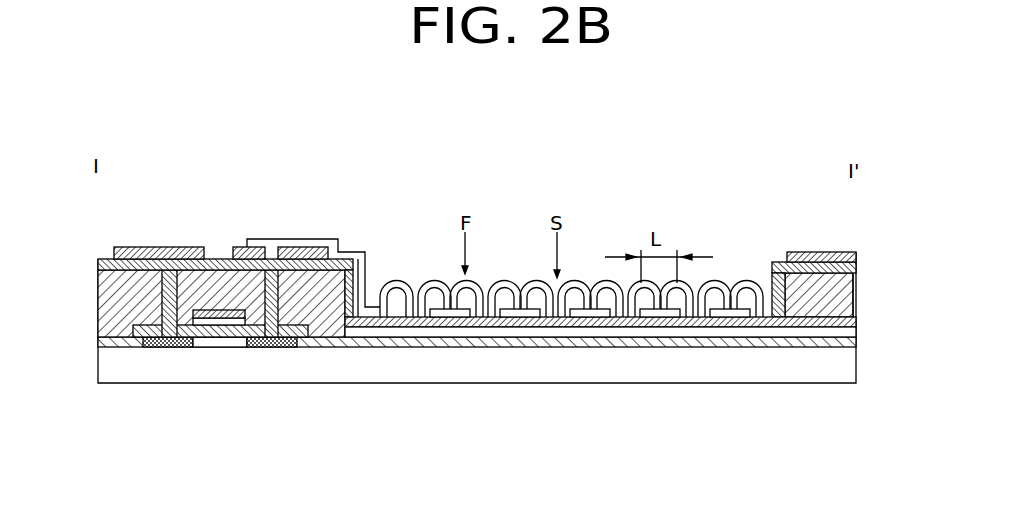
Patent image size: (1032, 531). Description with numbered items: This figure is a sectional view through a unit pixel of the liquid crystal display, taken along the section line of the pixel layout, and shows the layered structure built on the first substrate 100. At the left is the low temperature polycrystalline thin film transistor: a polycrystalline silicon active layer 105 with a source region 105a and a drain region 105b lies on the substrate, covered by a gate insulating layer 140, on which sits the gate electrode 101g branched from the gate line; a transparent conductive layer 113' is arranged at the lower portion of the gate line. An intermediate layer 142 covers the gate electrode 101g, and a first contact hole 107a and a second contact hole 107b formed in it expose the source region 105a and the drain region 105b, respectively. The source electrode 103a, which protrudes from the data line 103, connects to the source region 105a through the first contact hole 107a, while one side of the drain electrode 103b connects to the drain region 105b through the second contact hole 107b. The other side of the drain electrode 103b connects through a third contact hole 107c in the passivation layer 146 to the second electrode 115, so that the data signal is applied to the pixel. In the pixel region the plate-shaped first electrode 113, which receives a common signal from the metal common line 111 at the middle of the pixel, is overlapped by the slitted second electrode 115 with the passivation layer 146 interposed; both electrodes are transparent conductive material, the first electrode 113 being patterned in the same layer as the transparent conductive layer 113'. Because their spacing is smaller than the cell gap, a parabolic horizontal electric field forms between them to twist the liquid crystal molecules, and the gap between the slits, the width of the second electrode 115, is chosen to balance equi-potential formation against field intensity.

The first substrate 100 is at (98, 373).
The gate insulating layer 140 is at (98, 342).
The intermediate layer 142 is at (98, 302).
The passivation layer 146 is at (98, 263).
The source electrode 103a is at (147, 248).
The drain electrode 103b is at (300, 260).
The data line 103 is at (823, 252).
The gate electrode 101g is at (200, 310).
The transparent conductive layer 113' is at (227, 259).
The active layer 105 is at (233, 347).
The source region 105a is at (153, 348).
The drain region 105b is at (317, 347).
The first contact hole 107a is at (172, 347).
The second contact hole 107b is at (273, 347).
The third contact hole 107c is at (271, 250).
The second electrode 115 is at (363, 257).
The first electrode 113 is at (600, 378).
The common line 111 is at (800, 330).